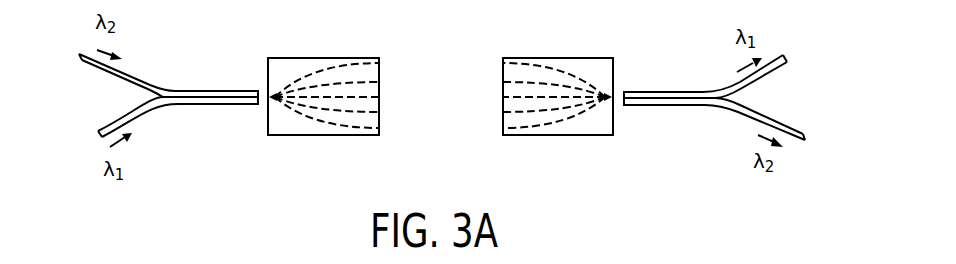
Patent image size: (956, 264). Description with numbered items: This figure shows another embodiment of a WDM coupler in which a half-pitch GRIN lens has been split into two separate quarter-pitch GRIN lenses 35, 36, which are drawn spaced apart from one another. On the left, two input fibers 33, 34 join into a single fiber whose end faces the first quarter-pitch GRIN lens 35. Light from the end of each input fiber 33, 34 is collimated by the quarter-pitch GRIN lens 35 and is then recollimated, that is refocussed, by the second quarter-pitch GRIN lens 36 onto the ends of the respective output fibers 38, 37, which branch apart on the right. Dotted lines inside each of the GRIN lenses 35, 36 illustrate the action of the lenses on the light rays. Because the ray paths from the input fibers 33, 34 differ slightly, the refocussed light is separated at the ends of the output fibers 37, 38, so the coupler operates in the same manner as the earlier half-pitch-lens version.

The input fiber 33 is at (135, 72).
The input fiber 34 is at (158, 105).
The quarter-pitch GRIN lens 35 is at (287, 128).
The quarter-pitch GRIN lens 36 is at (590, 122).
The output fiber 37 is at (723, 90).
The output fiber 38 is at (740, 110).